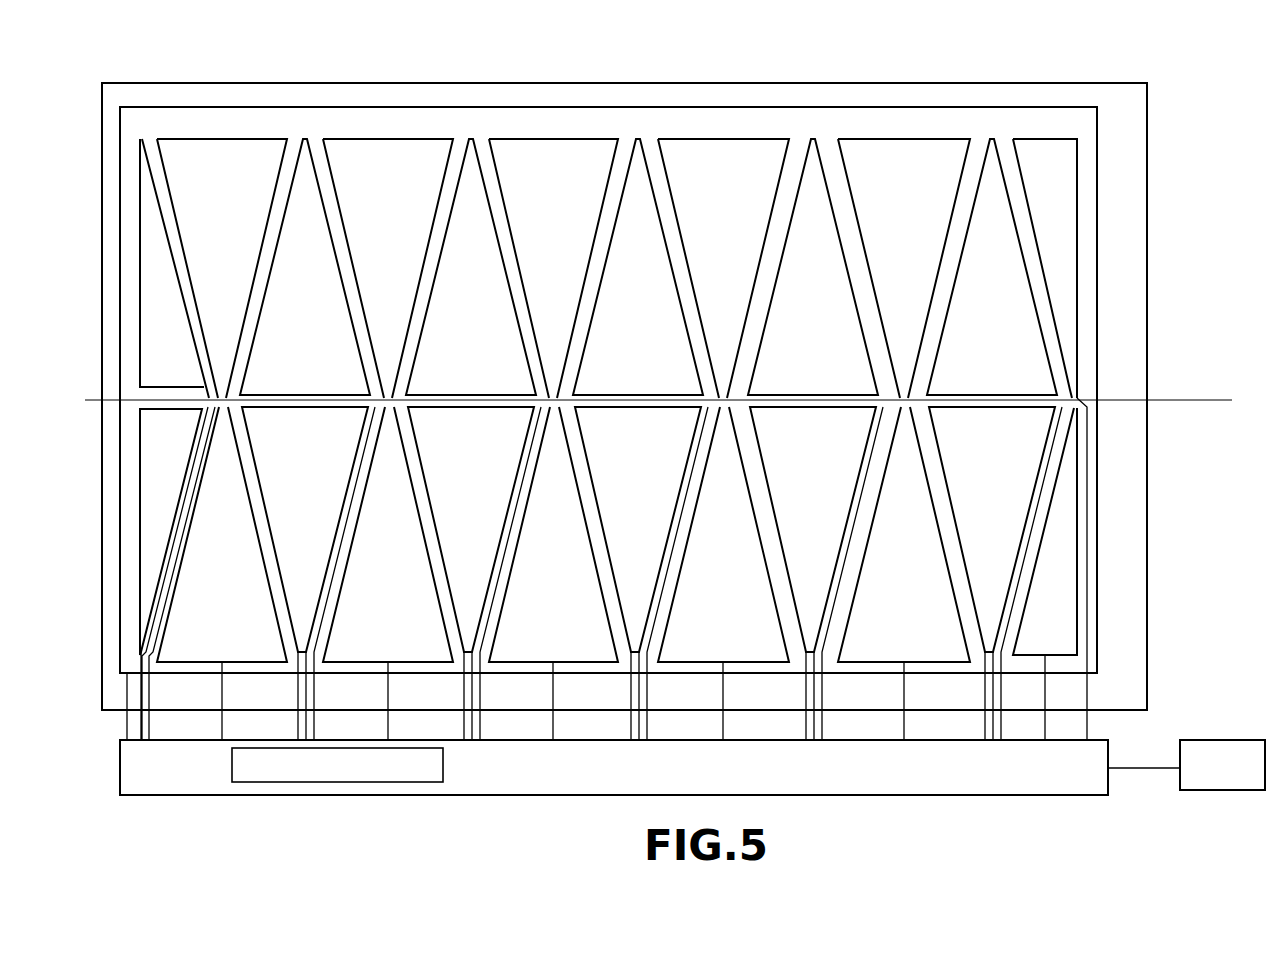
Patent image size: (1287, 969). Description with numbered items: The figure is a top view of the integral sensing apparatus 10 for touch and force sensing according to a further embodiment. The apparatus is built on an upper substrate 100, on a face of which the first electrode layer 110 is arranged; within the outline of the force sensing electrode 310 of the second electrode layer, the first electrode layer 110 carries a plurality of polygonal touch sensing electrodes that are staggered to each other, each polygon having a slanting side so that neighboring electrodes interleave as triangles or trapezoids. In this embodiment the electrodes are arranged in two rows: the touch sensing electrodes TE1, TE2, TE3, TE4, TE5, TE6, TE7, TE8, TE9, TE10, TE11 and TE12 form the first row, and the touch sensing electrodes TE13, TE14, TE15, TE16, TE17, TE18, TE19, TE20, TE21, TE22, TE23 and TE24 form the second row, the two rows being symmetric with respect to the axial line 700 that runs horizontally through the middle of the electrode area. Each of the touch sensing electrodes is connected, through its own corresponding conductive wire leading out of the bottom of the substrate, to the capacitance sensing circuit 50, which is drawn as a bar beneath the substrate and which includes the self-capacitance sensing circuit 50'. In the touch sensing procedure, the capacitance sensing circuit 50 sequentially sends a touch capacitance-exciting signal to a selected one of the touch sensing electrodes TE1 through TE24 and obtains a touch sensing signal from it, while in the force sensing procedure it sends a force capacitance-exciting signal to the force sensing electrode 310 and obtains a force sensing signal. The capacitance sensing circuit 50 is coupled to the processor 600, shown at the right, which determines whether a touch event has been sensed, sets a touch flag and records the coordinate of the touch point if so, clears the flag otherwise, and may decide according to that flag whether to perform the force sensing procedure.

The integral sensing apparatus 10 is at (467, 44).
The upper substrate 100 is at (777, 83).
The force sensing electrode 310 is at (622, 120).
The first electrode layer 110 is at (722, 150).
The axial line 700 is at (680, 401).
The capacitance sensing circuit 50 is at (614, 780).
The self-capacitance sensing circuit 50' is at (387, 765).
The processor 600 is at (1232, 748).
The touch sensing electrode TE1 is at (174, 268).
The touch sensing electrode TE2 is at (222, 268).
The touch sensing electrode TE3 is at (305, 267).
The touch sensing electrode TE4 is at (388, 268).
The touch sensing electrode TE5 is at (471, 267).
The touch sensing electrode TE6 is at (553, 268).
The touch sensing electrode TE7 is at (638, 267).
The touch sensing electrode TE8 is at (723, 268).
The touch sensing electrode TE9 is at (813, 267).
The touch sensing electrode TE10 is at (904, 268).
The touch sensing electrode TE11 is at (992, 267).
The touch sensing electrode TE12 is at (1045, 268).
The touch sensing electrode TE13 is at (171, 573).
The touch sensing electrode TE14 is at (222, 573).
The touch sensing electrode TE15 is at (308, 573).
The touch sensing electrode TE16 is at (388, 573).
The touch sensing electrode TE17 is at (474, 573).
The touch sensing electrode TE18 is at (553, 573).
The touch sensing electrode TE19 is at (641, 573).
The touch sensing electrode TE20 is at (723, 573).
The touch sensing electrode TE21 is at (816, 573).
The touch sensing electrode TE22 is at (904, 573).
The touch sensing electrode TE23 is at (995, 573).
The touch sensing electrode TE24 is at (1050, 569).